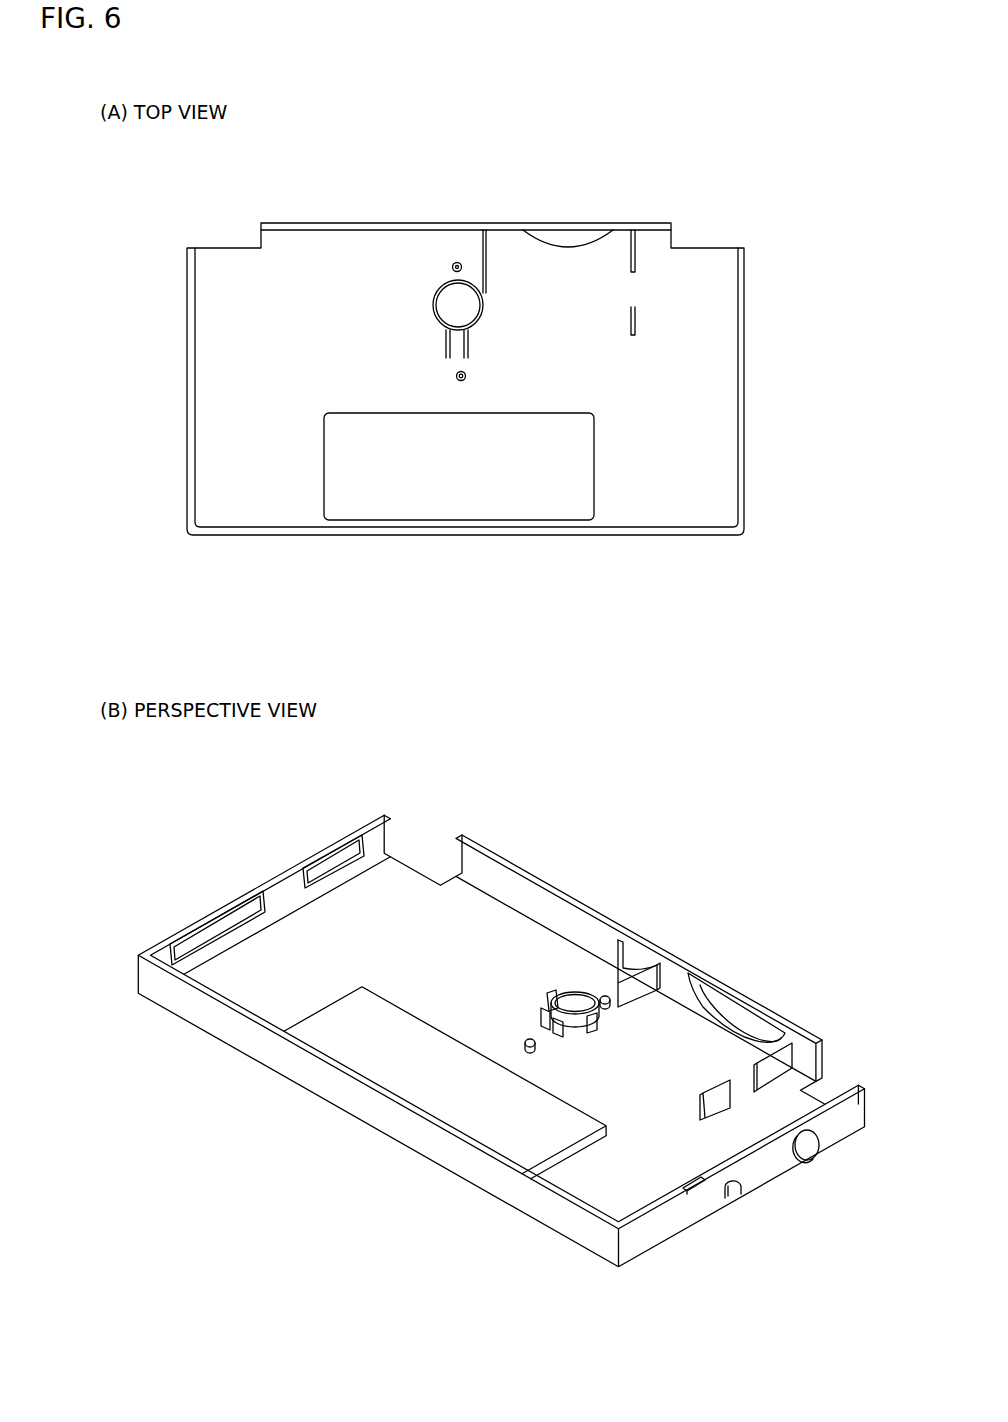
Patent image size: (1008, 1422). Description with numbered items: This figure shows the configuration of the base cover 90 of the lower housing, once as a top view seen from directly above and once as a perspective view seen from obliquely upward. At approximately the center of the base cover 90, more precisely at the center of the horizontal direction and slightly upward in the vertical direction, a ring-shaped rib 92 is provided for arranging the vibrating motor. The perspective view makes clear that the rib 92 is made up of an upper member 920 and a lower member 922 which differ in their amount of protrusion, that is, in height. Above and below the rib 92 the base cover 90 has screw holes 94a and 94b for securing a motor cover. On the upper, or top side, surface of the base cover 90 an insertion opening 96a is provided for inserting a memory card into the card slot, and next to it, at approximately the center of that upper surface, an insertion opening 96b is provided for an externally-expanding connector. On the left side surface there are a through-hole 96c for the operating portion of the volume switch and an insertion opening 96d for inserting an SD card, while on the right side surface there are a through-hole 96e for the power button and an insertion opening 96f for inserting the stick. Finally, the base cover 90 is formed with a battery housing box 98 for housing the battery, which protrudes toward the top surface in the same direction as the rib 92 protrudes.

The base cover 90 is at (336, 181).
The ring-shaped rib 92 is at (490, 298).
The upper member 920 is at (583, 998).
The lower member 922 is at (585, 1032).
The screw hole 94a is at (457, 262).
The screw hole 94b is at (459, 381).
The insertion opening 96a is at (752, 1038).
The insertion opening 96b is at (636, 955).
The through-hole 96c is at (336, 857).
The insertion opening 96d is at (237, 909).
The through-hole 96e is at (810, 1143).
The insertion opening 96f is at (735, 1192).
The battery housing box 98 is at (474, 490).